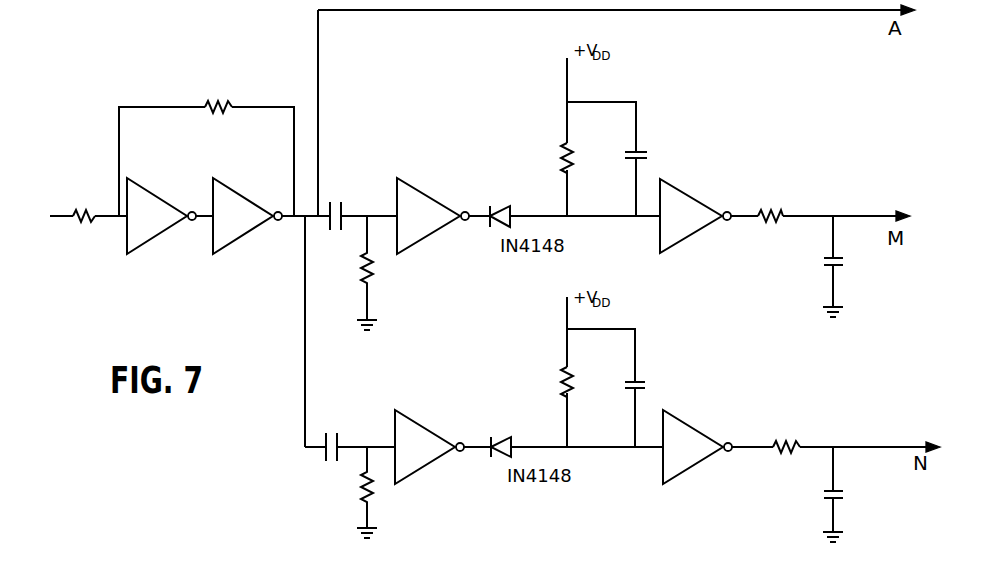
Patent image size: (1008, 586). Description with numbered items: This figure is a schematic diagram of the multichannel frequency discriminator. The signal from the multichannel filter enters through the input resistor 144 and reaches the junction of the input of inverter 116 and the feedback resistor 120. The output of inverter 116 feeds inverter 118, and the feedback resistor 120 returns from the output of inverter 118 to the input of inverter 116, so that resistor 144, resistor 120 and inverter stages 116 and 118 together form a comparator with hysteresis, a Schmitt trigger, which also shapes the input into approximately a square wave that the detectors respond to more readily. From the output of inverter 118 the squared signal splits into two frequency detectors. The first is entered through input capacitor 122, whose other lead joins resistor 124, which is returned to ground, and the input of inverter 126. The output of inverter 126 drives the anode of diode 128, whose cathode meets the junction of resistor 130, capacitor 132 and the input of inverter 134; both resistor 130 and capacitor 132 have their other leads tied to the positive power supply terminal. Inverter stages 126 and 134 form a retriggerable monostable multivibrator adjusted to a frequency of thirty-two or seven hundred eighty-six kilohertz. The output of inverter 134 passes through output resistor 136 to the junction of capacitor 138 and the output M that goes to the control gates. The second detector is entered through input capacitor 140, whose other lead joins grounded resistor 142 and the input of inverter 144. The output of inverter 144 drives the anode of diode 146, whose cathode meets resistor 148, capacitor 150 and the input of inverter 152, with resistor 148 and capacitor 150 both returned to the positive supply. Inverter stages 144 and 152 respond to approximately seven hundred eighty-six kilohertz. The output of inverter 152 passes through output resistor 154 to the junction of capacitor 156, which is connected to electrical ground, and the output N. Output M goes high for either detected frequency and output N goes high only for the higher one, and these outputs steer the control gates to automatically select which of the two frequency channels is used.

The inverter 116 is at (160, 227).
The inverter 118 is at (245, 227).
The feedback resistor 120 is at (216, 104).
The input capacitor 122 is at (341, 211).
The resistor 124 is at (364, 266).
The inverter 126 is at (434, 231).
The diode 128 is at (508, 204).
The resistor 130 is at (567, 147).
The capacitor 132 is at (637, 153).
The inverter 134 is at (696, 232).
The output resistor 136 is at (776, 214).
The capacitor 138 is at (842, 267).
The input capacitor 140 is at (348, 417).
The resistor 142 is at (365, 480).
The inverter 144 is at (86, 213).
The diode 146 is at (506, 436).
The resistor 148 is at (567, 375).
The capacitor 150 is at (640, 388).
The inverter 152 is at (701, 459).
The output resistor 154 is at (793, 441).
The capacitor 156 is at (838, 491).